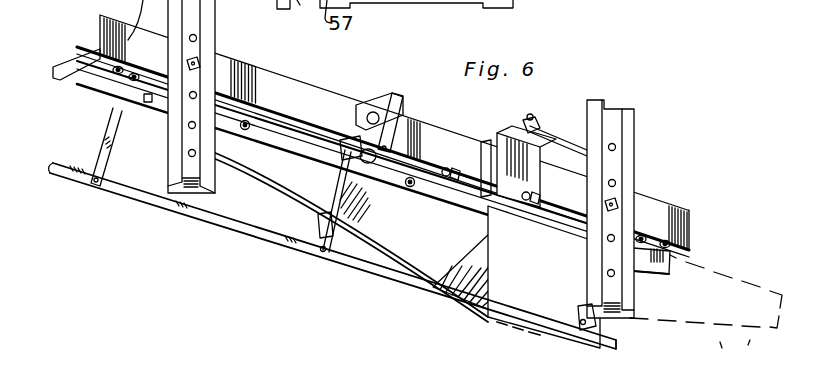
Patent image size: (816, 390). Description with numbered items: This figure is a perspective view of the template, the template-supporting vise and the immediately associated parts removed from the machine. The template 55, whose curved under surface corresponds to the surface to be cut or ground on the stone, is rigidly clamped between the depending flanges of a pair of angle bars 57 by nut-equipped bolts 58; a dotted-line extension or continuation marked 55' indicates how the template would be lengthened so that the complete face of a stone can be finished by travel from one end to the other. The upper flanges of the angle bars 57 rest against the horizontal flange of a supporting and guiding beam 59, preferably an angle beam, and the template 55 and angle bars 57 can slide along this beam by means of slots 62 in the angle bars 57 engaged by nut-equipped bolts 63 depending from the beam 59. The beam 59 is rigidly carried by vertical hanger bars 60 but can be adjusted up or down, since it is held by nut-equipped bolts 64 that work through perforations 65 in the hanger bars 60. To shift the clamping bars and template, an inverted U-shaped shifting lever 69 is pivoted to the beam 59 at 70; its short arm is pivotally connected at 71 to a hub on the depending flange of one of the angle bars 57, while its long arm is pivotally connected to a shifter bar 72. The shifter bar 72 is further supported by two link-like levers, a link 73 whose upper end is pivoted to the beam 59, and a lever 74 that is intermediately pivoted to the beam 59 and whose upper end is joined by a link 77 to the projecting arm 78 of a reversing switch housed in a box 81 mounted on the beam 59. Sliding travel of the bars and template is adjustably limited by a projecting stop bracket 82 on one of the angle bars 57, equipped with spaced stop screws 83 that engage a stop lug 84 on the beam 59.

The template 55 is at (350, 237).
The template extension 55' is at (706, 311).
The angle bars 57 is at (68, 60).
The nut-equipped bolts 58 is at (247, 122).
The supporting and guiding beam 59 is at (332, 108).
The hanger bars 60 is at (213, 23).
The slots 62 is at (118, 74).
The nut-equipped bolts 63 is at (134, 81).
The nut-equipped bolts 64 is at (201, 63).
The perforations 65 is at (616, 147).
The shifting lever 69 is at (400, 117).
The pivot 70 is at (398, 110).
The pivotal connection 71 is at (372, 165).
The shifter bar 72 is at (223, 218).
The link 73 is at (106, 162).
The lever 74 is at (596, 328).
The link 77 is at (556, 133).
The projecting arm 78 is at (526, 122).
The box 81 is at (497, 135).
The stop bracket 82 is at (500, 236).
The stop screws 83 is at (450, 167).
The stop lug 84 is at (482, 142).